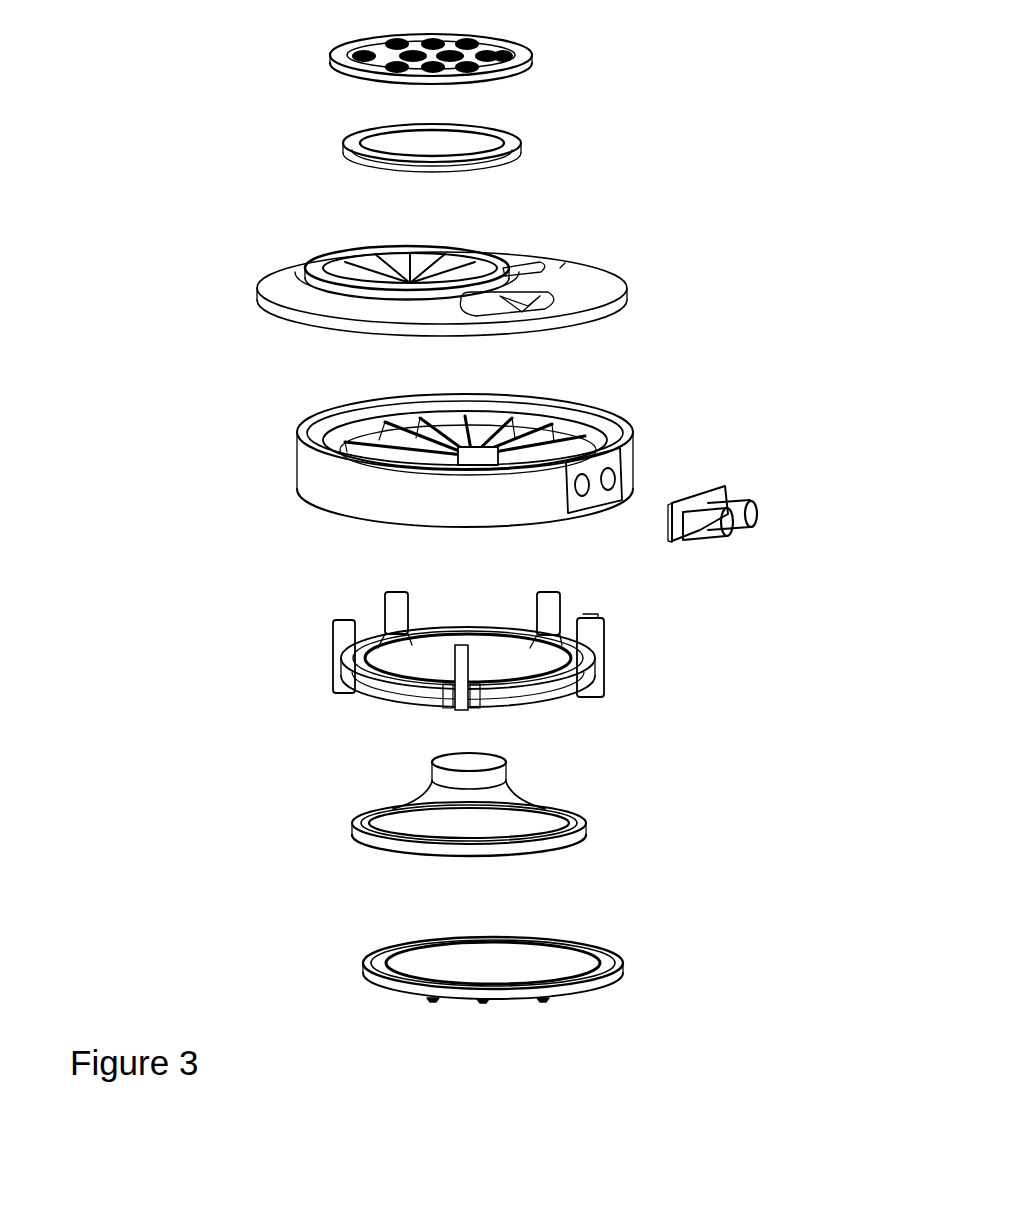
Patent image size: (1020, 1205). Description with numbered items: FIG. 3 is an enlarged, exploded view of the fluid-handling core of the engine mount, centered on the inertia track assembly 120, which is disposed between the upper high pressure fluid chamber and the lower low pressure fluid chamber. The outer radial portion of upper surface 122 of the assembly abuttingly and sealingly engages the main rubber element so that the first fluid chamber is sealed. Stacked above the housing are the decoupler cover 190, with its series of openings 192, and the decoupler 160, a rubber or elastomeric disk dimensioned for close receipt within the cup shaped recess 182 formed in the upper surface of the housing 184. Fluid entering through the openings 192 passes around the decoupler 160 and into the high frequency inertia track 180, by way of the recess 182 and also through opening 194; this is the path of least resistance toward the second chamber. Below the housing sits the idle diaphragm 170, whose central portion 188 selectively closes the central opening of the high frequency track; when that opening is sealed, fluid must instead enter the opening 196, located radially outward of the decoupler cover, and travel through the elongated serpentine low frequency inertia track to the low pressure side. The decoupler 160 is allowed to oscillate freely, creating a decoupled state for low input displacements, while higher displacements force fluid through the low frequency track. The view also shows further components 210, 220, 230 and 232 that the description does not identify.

The inertia track assembly 120 is at (632, 470).
The outer radial portion of upper surface 122 is at (598, 273).
The decoupler 160 is at (521, 137).
The idle diaphragm 170 is at (567, 789).
The high frequency inertia track 180 is at (497, 430).
The cup shaped recess 182 is at (424, 247).
The upper surface of the housing 184 is at (574, 262).
The central portion of idle diaphragm 188 is at (430, 772).
The decoupler cover 190 is at (531, 52).
The openings 192 is at (470, 51).
The opening 194 is at (529, 262).
The opening of low frequency inertia track 196 is at (532, 294).
The terminal plate 210 is at (697, 530).
The terminal posts 220 is at (735, 500).
The frame 230 is at (600, 664).
The magnet ring 232 is at (390, 948).